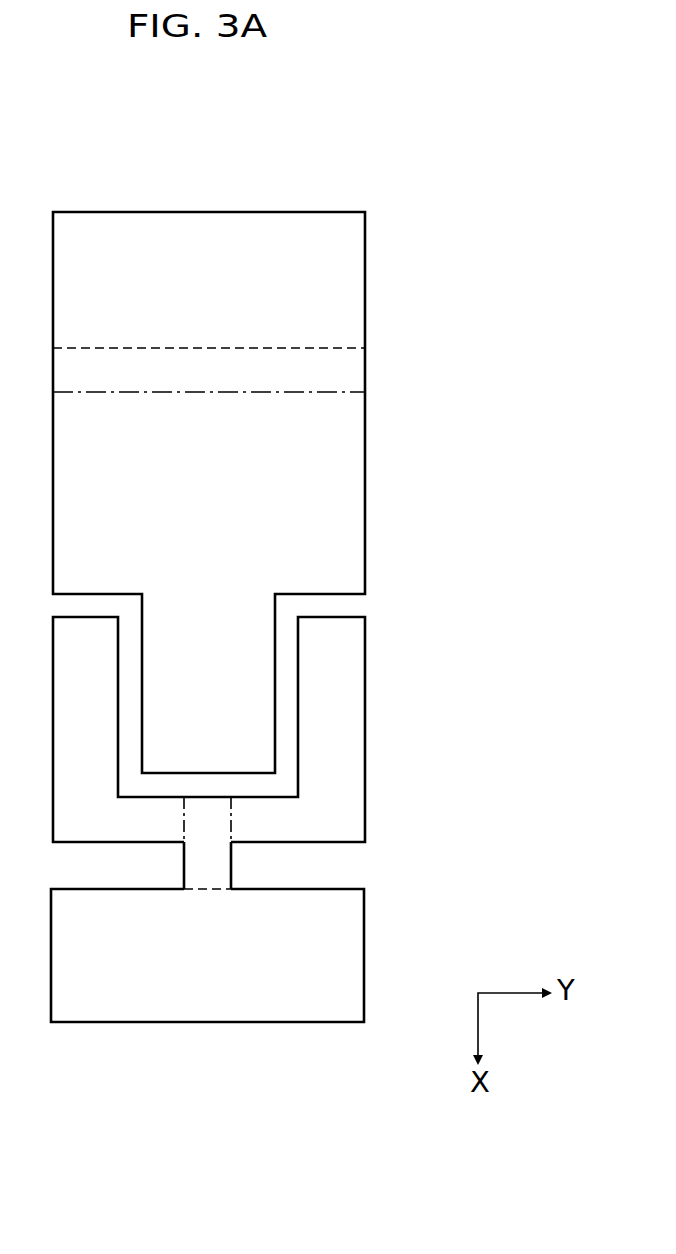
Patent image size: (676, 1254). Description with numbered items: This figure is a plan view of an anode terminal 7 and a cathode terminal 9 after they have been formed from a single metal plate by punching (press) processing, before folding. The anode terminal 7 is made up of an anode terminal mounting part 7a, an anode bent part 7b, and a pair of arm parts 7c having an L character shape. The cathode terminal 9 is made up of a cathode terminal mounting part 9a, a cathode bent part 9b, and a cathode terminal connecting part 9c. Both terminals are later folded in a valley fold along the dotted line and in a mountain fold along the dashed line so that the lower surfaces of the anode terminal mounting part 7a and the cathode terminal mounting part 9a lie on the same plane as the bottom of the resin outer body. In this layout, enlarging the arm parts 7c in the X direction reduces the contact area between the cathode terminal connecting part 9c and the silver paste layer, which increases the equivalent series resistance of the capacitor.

The cathode terminal 9 is at (250, 459).
The cathode terminal mounting part 9a is at (302, 232).
The cathode bent part 9b is at (350, 380).
The cathode terminal connecting part 9c is at (350, 470).
The anode terminal 7 is at (234, 853).
The anode terminal mounting part 7a is at (210, 1012).
The anode bent part 7b is at (195, 873).
The arm parts 7c is at (340, 695).